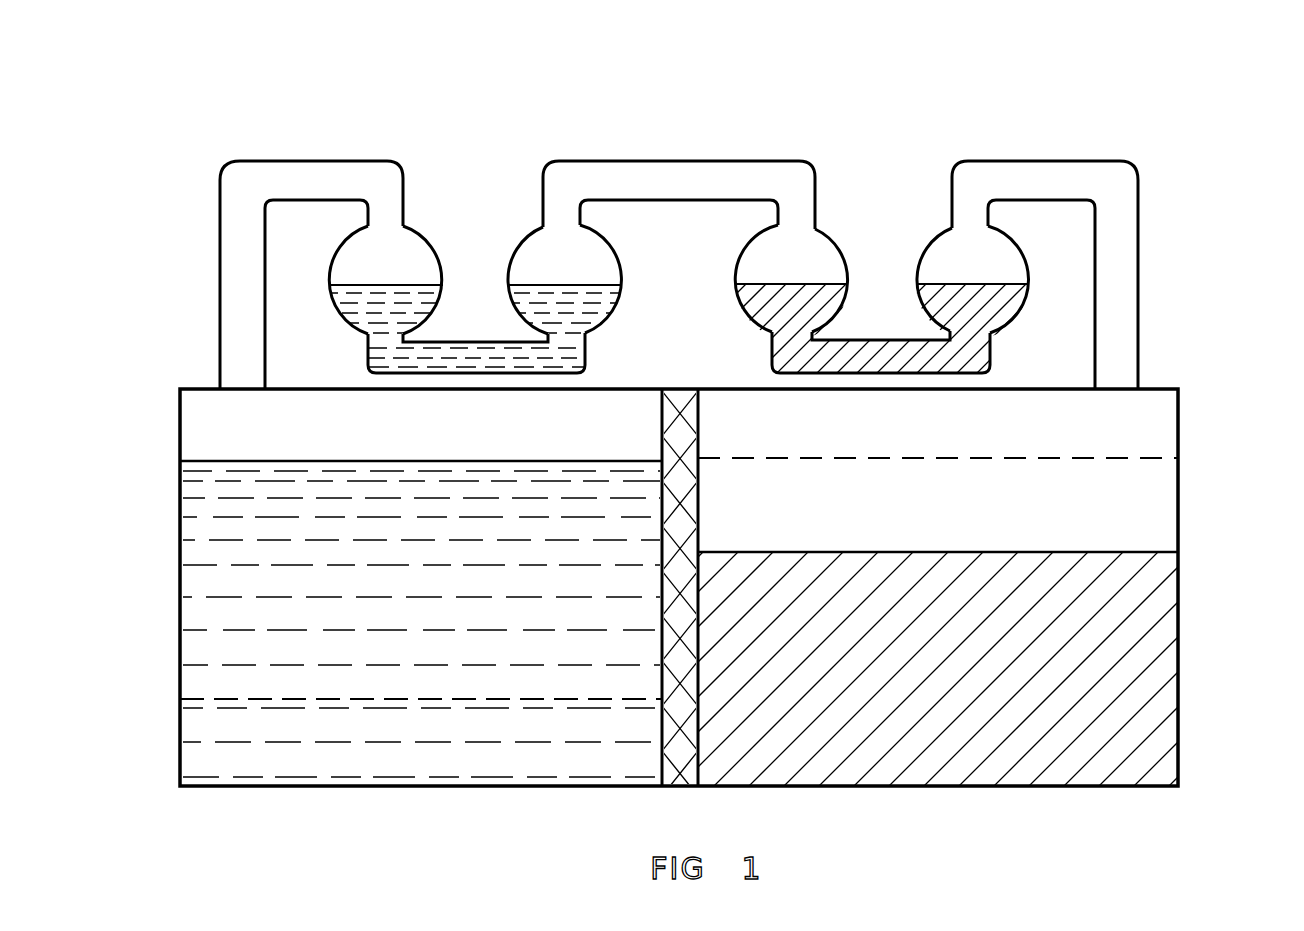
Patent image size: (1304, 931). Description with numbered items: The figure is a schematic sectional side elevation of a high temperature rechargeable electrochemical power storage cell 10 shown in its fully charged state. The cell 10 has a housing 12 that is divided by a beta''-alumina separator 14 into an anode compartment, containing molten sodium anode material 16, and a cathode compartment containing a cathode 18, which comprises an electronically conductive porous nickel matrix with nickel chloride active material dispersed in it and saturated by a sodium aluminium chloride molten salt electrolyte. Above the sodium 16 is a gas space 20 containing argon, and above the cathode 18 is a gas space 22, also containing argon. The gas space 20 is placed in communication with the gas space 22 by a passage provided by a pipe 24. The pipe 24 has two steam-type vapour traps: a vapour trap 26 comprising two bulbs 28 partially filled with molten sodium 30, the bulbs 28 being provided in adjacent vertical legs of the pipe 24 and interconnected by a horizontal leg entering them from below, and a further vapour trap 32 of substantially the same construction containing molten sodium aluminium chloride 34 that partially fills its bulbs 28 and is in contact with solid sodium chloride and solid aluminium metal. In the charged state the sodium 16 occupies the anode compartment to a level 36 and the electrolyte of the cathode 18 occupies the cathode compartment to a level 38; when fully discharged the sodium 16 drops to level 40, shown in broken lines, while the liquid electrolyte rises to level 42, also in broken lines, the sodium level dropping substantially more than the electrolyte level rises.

The cell 10 is at (996, 82).
The housing 12 is at (1180, 482).
The beta''-alumina separator 14 is at (690, 727).
The molten sodium anode material 16 is at (210, 583).
The cathode 18 is at (1137, 655).
The gas space 20 is at (210, 431).
The gas space 22 is at (1150, 436).
The pipe 24 is at (333, 178).
The vapour trap 26 is at (478, 170).
The bulbs 28 is at (535, 255).
The molten sodium 30 is at (368, 305).
The vapour trap 32 is at (880, 170).
The molten sodium aluminium chloride 34 is at (988, 310).
The level 36 is at (580, 456).
The level 38 is at (1133, 546).
The level 40 is at (231, 694).
The level 42 is at (1110, 450).